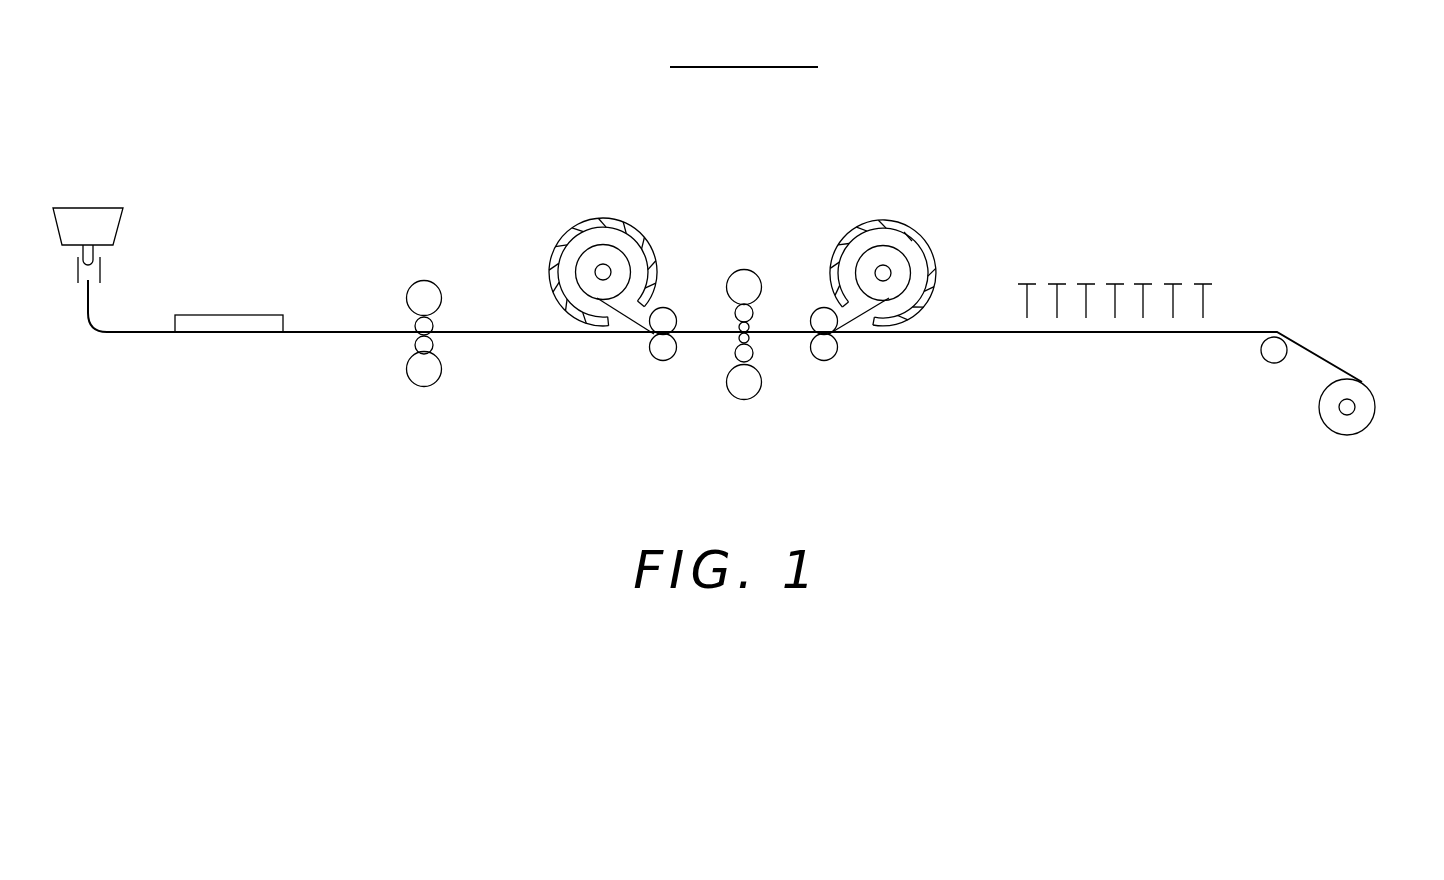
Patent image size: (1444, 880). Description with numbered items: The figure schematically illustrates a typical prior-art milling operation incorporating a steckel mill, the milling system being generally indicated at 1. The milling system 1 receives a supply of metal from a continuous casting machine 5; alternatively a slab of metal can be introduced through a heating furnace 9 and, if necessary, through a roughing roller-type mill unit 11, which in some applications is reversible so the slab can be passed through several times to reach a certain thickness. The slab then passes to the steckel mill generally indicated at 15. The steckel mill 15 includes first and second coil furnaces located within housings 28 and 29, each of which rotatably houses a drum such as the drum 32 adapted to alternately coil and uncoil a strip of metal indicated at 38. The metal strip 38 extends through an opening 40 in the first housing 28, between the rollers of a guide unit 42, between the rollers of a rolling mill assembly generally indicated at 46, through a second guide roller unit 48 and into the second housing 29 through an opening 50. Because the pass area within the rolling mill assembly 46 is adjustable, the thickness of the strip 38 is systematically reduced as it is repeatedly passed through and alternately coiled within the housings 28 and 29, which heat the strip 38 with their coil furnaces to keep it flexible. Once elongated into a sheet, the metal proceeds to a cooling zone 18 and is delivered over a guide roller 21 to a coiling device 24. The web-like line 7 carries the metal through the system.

The milling system 1 is at (940, 95).
The continuous casting machine 5 is at (102, 193).
The web 7 is at (333, 331).
The heating furnace 9 is at (213, 313).
The roughing roller-type mill unit 11 is at (440, 264).
The steckel mill 15 is at (619, 292).
The first housing 28 is at (603, 218).
The drum 32 is at (597, 270).
The opening 40 is at (647, 307).
The guide unit 42 is at (638, 352).
The rolling mill assembly 46 is at (766, 252).
The second housing 29 is at (890, 220).
The metal strip 38 is at (850, 323).
The second guide roller unit 48 is at (825, 373).
The opening 50 is at (872, 335).
The cooling zone 18 is at (1142, 268).
The guide roller 21 is at (1273, 355).
The coiling device 24 is at (1372, 371).